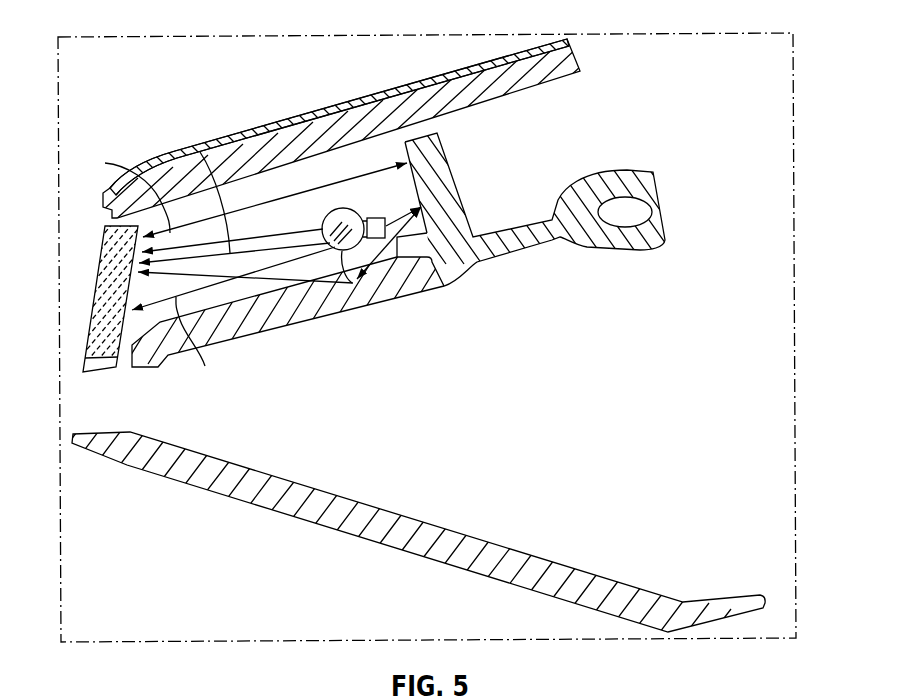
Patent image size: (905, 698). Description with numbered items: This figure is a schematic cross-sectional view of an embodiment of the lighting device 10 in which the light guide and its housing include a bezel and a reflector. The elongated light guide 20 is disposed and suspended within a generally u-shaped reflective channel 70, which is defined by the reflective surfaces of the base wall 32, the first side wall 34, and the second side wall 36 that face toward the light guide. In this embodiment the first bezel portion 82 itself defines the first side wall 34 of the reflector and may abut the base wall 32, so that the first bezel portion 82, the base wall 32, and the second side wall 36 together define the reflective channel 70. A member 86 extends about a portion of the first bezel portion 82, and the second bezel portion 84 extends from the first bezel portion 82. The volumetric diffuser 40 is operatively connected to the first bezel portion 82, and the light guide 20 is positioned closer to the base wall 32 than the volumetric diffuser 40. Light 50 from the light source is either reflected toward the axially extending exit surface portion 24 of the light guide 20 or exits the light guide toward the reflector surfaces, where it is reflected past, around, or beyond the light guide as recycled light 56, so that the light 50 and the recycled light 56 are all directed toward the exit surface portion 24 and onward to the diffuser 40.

The lighting device 10 is at (772, 29).
The elongated light guide 20 is at (334, 205).
The exit surface portion 24 is at (369, 309).
The base wall 32 is at (451, 165).
The first side wall 34 is at (352, 128).
The second side wall 36 is at (374, 218).
The volumetric diffuser 40 is at (87, 255).
The light 50 is at (148, 272).
The recycled light 56 is at (410, 212).
The reflective channel 70 is at (252, 202).
The first bezel portion 82 is at (352, 128).
The second bezel portion 84 is at (327, 535).
The member 86 is at (260, 130).